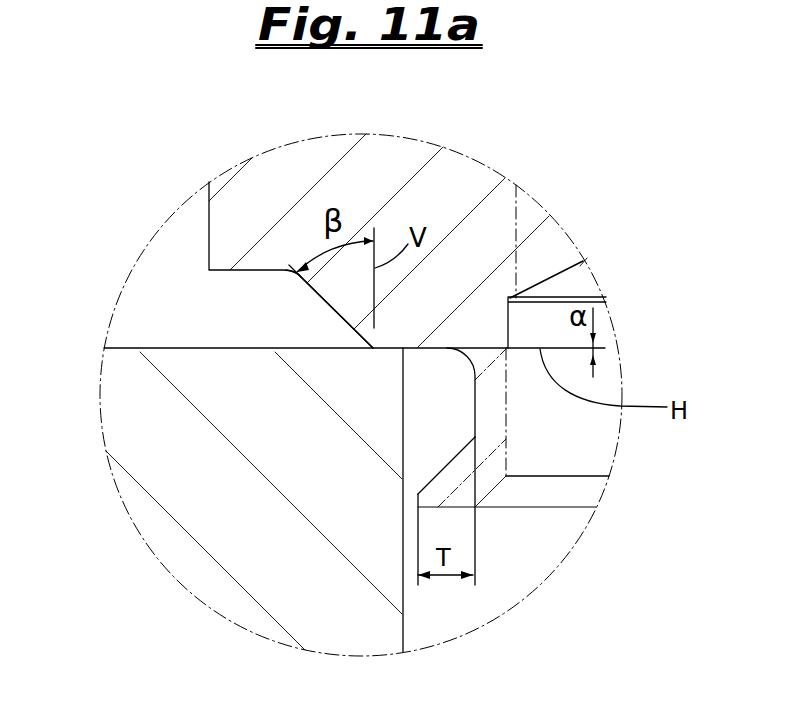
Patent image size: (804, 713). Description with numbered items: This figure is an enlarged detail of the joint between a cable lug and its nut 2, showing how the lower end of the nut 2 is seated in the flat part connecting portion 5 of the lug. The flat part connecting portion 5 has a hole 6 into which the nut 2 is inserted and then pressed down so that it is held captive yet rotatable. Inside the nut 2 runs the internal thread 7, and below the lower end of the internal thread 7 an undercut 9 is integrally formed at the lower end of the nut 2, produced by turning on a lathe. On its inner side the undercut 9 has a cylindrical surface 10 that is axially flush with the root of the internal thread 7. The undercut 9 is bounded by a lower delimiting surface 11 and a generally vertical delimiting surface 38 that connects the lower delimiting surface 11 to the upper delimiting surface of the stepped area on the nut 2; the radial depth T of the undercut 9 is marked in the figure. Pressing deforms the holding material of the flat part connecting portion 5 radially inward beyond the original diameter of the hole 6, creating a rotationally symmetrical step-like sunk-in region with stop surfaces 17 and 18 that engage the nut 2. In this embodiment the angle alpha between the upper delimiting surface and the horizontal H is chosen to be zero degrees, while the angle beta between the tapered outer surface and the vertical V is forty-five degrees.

The nut 2 is at (273, 188).
The flat part connecting portion 5 is at (232, 523).
The hole 6 is at (457, 595).
The internal thread 7 is at (547, 248).
The undercut 9 is at (453, 403).
The cylindrical surface 10 is at (577, 437).
The lower delimiting surface 11 is at (442, 468).
The stop surface 17 is at (438, 347).
The stop surface 18 is at (333, 312).
The vertical delimiting surface 38 is at (475, 405).